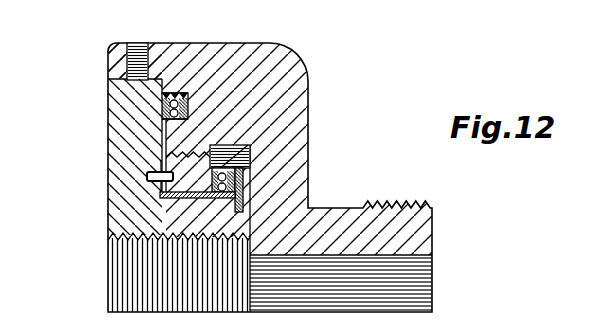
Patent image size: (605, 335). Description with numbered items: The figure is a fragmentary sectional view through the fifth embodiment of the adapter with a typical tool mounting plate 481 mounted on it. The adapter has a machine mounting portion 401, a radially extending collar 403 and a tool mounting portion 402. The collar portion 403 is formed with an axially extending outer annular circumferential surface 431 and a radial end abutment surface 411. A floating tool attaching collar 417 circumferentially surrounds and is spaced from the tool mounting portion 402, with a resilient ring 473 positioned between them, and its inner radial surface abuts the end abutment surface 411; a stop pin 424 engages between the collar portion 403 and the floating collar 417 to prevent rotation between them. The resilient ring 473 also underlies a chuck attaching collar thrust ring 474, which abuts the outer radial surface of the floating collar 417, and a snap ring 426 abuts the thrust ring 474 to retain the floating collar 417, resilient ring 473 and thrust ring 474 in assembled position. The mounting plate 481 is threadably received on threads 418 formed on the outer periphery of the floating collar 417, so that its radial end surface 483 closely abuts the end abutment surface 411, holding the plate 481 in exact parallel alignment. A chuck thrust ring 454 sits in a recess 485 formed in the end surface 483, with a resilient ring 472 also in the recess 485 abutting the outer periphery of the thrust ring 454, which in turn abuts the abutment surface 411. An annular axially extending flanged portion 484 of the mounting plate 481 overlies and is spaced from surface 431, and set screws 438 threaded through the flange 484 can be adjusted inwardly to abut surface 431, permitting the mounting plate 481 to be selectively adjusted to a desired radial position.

The machine mounting portion 401 is at (126, 184).
The tool mounting portion 402 is at (178, 212).
The radially extending collar 403 is at (133, 103).
The radial end abutment surface 411 is at (162, 140).
The floating tool attaching collar 417 is at (160, 162).
The threads 418 is at (204, 157).
The stop pin 424 is at (148, 174).
The snap ring 426 is at (240, 181).
The outer annular circumferential surface 431 is at (120, 78).
The set screws 438 is at (135, 45).
The chuck thrust ring 454 is at (195, 97).
The resilient ring 472 is at (184, 93).
The resilient ring 473 is at (222, 200).
The chuck attaching collar thrust ring 474 is at (235, 147).
The mounting plate 481 is at (345, 223).
The radial end surface 483 is at (184, 121).
The flanged portion 484 is at (122, 56).
The recess 485 is at (190, 117).